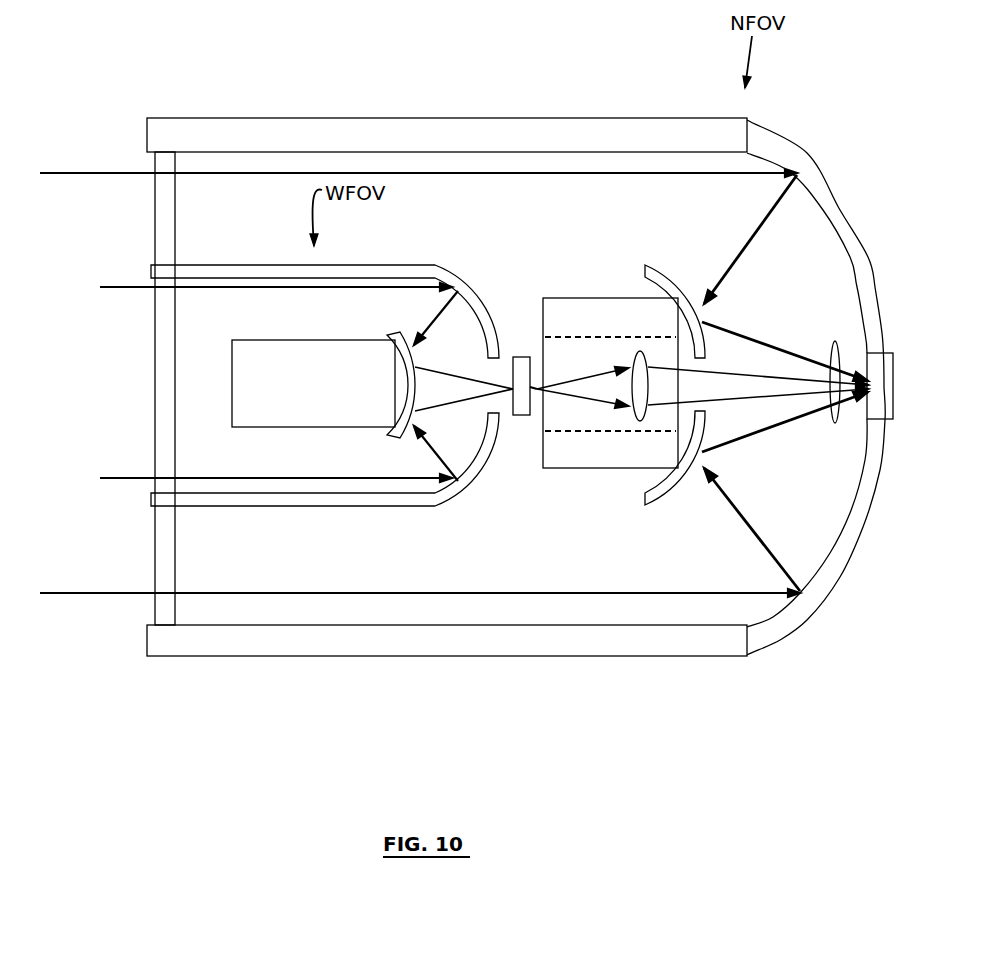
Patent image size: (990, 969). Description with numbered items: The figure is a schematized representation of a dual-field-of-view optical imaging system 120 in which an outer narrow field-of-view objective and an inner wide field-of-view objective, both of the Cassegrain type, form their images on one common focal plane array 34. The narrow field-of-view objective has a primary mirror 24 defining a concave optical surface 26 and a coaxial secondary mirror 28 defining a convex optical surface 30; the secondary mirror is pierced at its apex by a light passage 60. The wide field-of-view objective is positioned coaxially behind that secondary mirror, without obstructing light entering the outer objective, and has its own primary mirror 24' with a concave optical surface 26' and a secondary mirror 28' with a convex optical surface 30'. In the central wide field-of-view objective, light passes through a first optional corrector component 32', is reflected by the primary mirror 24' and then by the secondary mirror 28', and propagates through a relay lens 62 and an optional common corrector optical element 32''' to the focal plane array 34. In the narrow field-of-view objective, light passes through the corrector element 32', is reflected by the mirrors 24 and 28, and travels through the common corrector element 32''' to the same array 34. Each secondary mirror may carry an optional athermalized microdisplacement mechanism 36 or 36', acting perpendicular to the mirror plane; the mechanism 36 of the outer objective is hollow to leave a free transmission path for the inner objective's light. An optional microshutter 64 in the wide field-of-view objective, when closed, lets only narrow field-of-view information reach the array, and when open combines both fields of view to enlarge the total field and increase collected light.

The optical imaging system 120 is at (418, 90).
The primary mirror 24 is at (823, 522).
The concave optical surface 26 is at (815, 253).
The secondary mirror 28 is at (680, 279).
The convex optical surface 30 is at (670, 482).
The first corrector component 32' is at (192, 388).
The common corrector optical element 32''' is at (822, 410).
The focal plane array 34 is at (897, 394).
The athermalized microdisplacement mechanism 36 is at (610, 350).
The athermalized microdisplacement mechanism 36' is at (313, 383).
The light passage 60 is at (725, 363).
The relay lens 62 is at (641, 408).
The microshutter 64 is at (515, 418).
The primary mirror 24' is at (325, 479).
The concave optical surface 26' is at (340, 303).
The secondary mirror 28' is at (415, 299).
The convex optical surface 30' is at (376, 428).